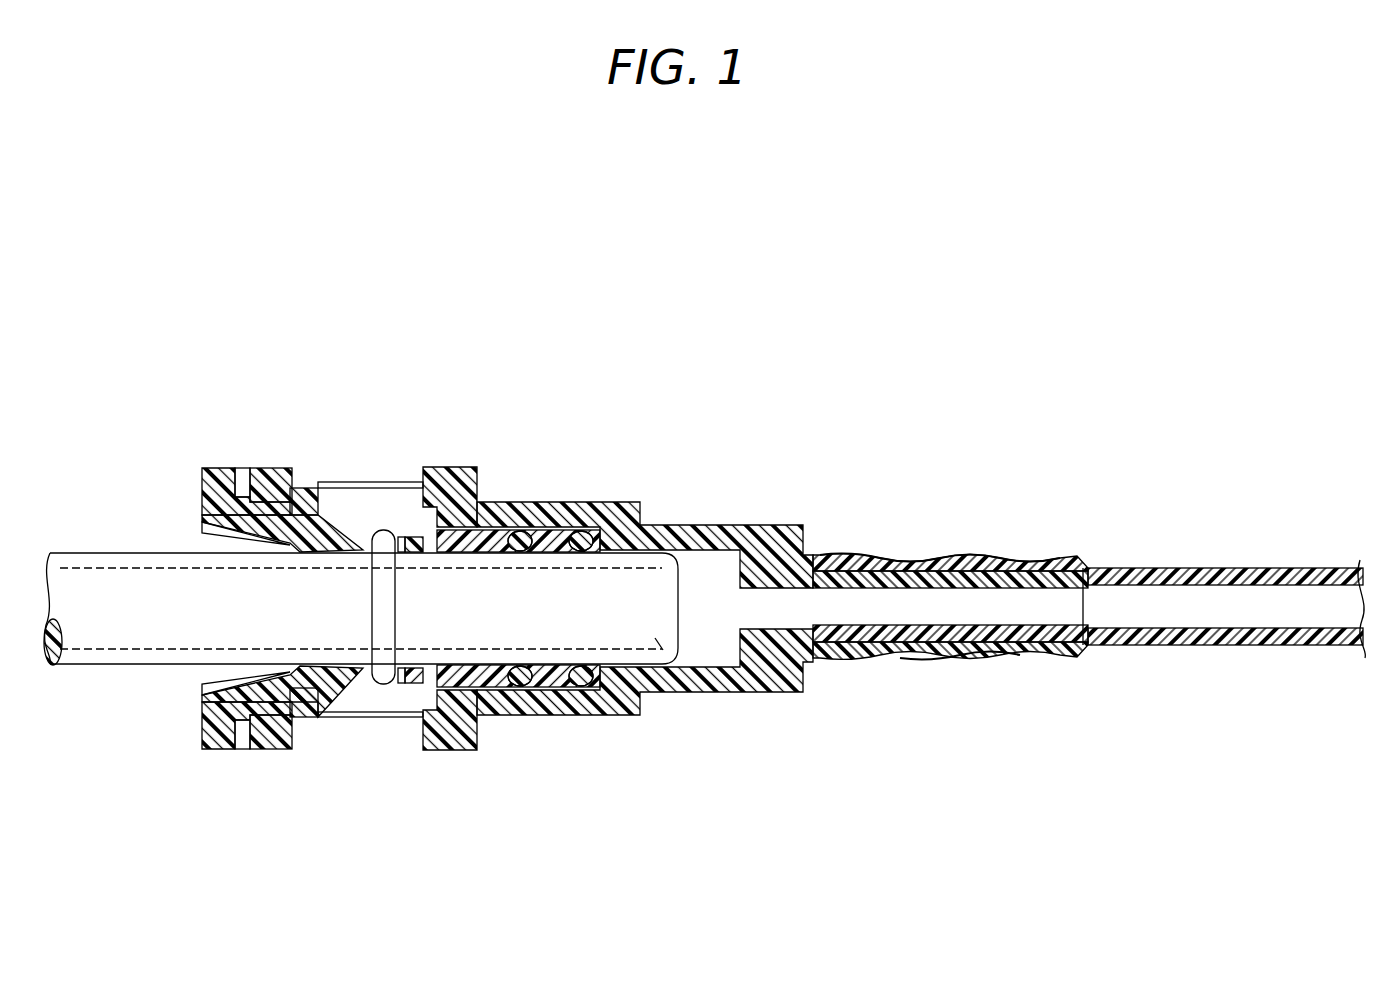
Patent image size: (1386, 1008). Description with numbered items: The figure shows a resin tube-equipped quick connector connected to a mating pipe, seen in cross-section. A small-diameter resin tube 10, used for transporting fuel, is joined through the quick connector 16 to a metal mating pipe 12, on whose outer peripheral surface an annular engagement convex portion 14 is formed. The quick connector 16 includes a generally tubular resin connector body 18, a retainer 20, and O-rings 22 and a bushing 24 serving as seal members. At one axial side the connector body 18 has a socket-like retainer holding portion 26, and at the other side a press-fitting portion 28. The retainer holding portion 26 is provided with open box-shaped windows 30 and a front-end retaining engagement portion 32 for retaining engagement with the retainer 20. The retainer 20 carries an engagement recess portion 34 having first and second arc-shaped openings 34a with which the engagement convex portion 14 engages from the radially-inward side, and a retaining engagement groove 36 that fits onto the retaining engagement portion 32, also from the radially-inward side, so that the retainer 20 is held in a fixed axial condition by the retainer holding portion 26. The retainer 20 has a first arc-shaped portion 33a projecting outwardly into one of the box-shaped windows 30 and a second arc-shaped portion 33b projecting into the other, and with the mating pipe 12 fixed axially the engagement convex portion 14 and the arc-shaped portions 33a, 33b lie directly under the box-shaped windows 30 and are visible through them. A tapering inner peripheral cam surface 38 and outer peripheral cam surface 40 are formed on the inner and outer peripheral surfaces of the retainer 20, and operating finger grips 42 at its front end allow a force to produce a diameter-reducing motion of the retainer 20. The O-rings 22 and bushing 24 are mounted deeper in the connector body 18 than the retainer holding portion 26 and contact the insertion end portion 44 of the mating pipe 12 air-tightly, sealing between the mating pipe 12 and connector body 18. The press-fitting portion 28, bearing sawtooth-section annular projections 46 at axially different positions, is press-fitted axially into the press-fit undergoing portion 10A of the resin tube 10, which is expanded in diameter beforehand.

The resin tube 10 is at (1216, 564).
The press-fit undergoing portion 10A is at (950, 614).
The mating pipe 12 is at (122, 550).
The engagement convex portion 14 is at (378, 700).
The quick connector 16 is at (621, 508).
The connector body 18 is at (651, 464).
The retainer 20 is at (213, 464).
The O-rings 22 is at (575, 716).
The bushing 24 is at (470, 718).
The retainer holding portion 26 is at (450, 464).
The press-fitting portion 28 is at (958, 654).
The box-shaped windows 30 is at (356, 584).
The retaining engagement portion 32 is at (265, 485).
The first arc-shaped portion 33a is at (303, 735).
The second arc-shaped portion 33b is at (306, 488).
The engagement recess portion 34 is at (405, 536).
The arc-shaped openings 34a is at (402, 666).
The retaining engagement groove 36 is at (272, 690).
The inner peripheral cam surface 38 is at (240, 693).
The outer peripheral cam surface 40 is at (342, 482).
The operating finger grips 42 is at (205, 490).
The insertion end portion 44 is at (660, 650).
The annular projections 46 is at (965, 552).